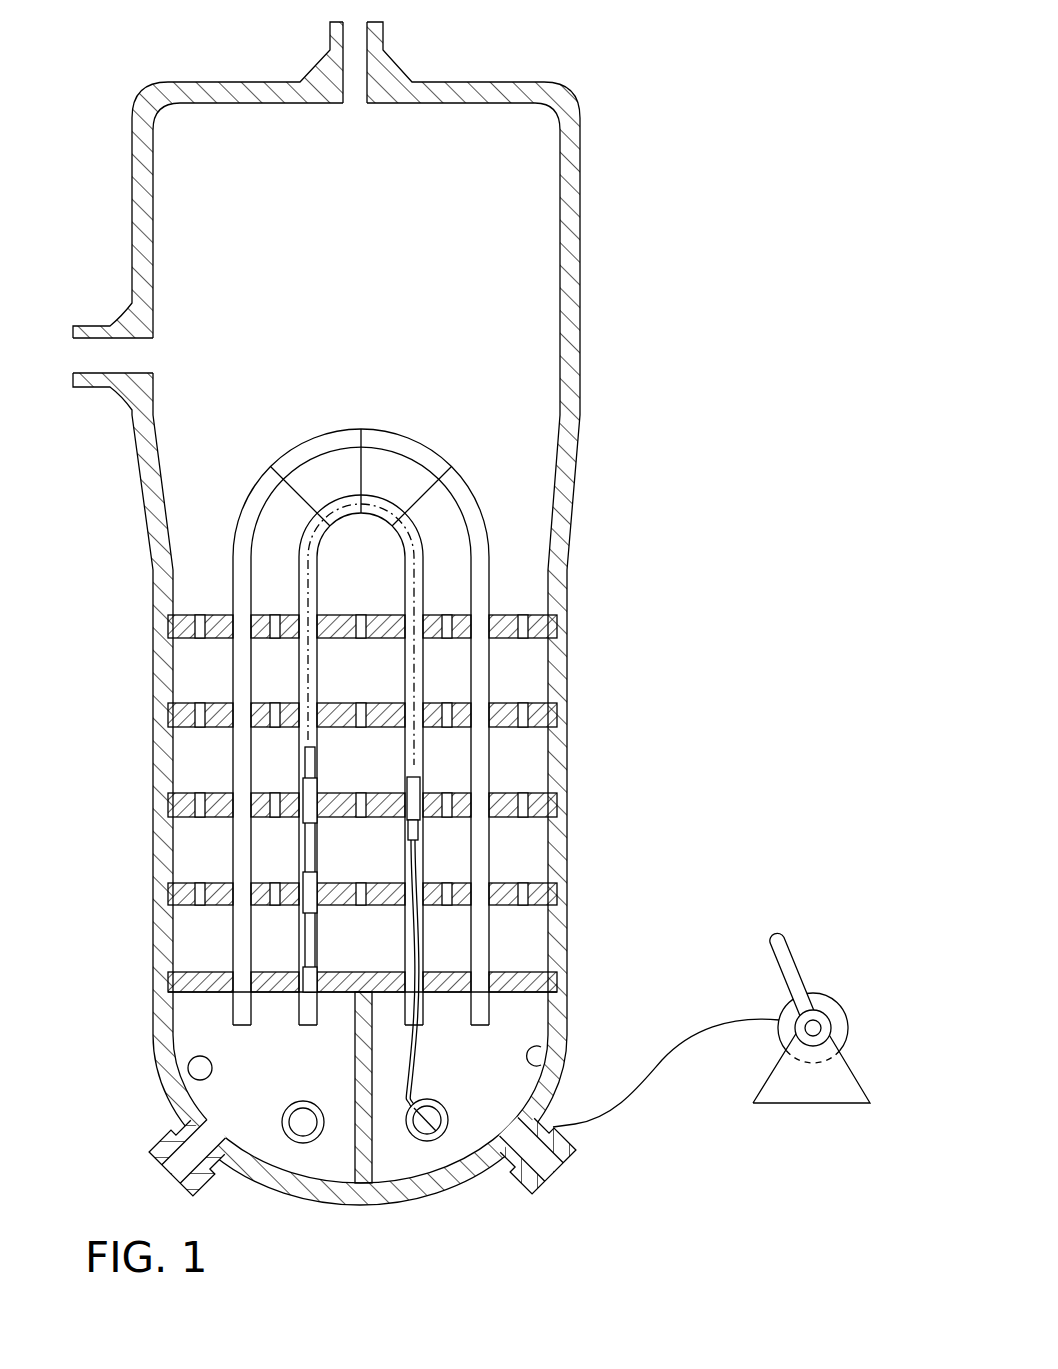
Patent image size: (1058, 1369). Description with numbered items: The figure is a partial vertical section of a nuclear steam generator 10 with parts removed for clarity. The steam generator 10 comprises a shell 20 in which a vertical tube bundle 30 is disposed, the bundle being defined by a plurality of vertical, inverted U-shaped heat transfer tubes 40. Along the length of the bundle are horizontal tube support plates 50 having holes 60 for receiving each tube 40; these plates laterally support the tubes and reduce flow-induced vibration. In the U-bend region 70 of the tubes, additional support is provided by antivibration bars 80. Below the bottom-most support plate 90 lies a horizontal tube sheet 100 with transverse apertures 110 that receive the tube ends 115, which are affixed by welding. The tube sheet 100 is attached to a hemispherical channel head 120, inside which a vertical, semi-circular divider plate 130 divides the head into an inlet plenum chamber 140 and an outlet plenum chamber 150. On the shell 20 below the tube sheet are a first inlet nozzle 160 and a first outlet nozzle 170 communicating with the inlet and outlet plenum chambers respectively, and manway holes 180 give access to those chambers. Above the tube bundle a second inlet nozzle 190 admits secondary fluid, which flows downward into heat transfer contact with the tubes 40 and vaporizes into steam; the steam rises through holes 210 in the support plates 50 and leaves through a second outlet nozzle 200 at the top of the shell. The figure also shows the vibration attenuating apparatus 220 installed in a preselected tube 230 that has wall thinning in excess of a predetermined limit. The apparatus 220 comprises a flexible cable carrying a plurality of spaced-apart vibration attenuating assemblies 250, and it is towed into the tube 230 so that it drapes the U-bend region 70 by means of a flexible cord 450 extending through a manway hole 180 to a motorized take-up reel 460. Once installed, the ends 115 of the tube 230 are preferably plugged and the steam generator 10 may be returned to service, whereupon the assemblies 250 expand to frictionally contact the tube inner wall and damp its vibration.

The nuclear steam generator 10 is at (733, 197).
The shell 20 is at (574, 356).
The steam generator tube bundle 30 is at (473, 536).
The heat transfer tubes 40 is at (420, 598).
The tube support plates 50 is at (556, 626).
The holes 60 is at (480, 700).
The U-bend region 70 is at (365, 430).
The antivibration bars 80 is at (418, 491).
The bottom-most support plate 90 is at (520, 884).
The tube sheet 100 is at (535, 968).
The transverse apertures 110 is at (545, 992).
The tube ends 115 is at (257, 1002).
The channel head 120 is at (573, 1027).
The divider plate 130 is at (353, 1100).
The inlet plenum chamber 140 is at (188, 1075).
The outlet plenum chamber 150 is at (537, 1061).
The first inlet nozzle 160 is at (157, 1147).
The first outlet nozzle 170 is at (510, 1180).
The manway holes 180 is at (443, 1100).
The second inlet nozzle 190 is at (103, 322).
The second outlet nozzle 200 is at (384, 36).
The holes 210 is at (527, 793).
The vibration attenuating apparatus 220 is at (295, 875).
The preselected tube 230 is at (297, 683).
The vibration attenuating assemblies 250 is at (300, 910).
The flexible cord 450 is at (647, 1073).
The take-up reel 460 is at (825, 995).